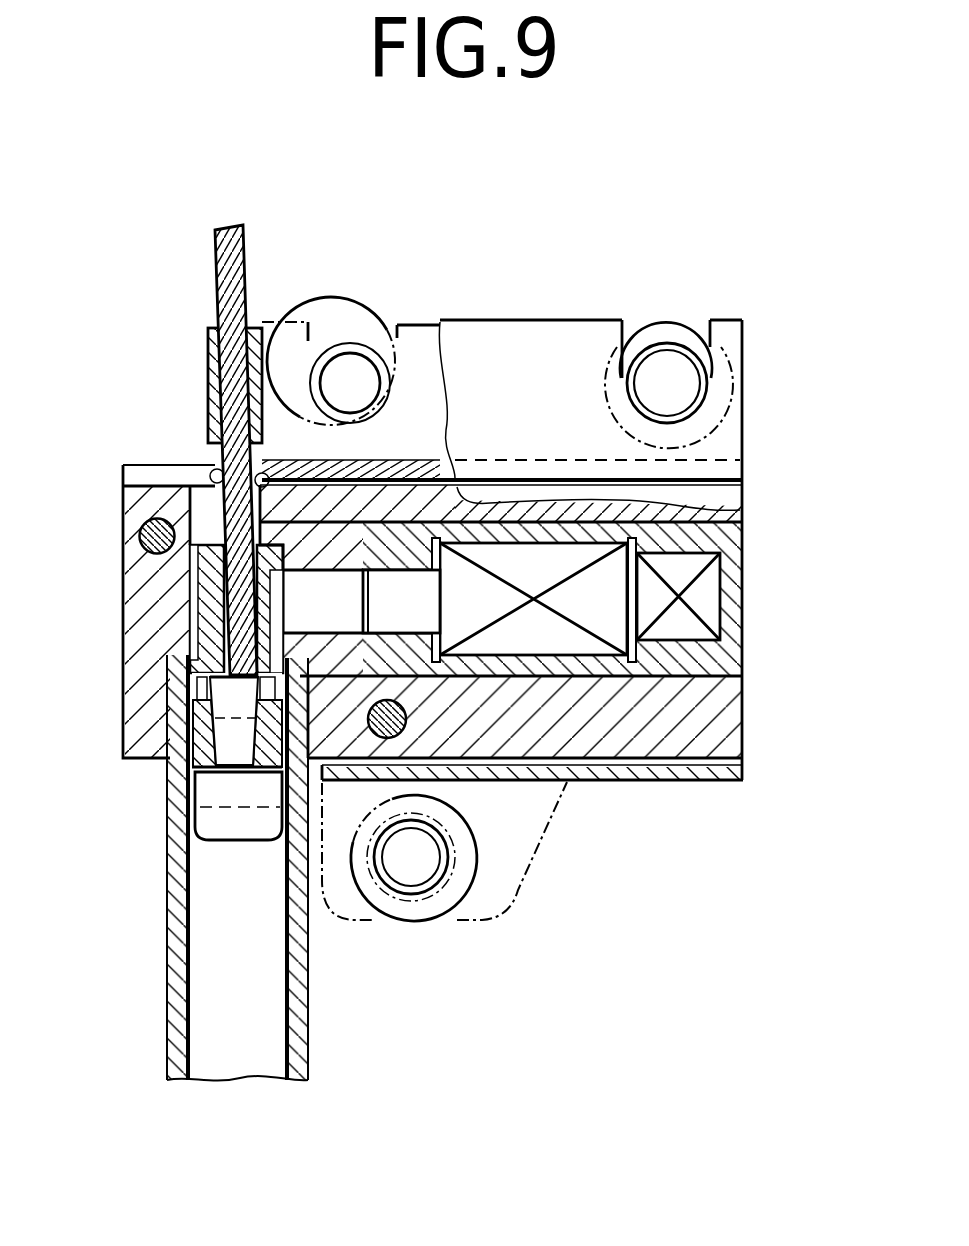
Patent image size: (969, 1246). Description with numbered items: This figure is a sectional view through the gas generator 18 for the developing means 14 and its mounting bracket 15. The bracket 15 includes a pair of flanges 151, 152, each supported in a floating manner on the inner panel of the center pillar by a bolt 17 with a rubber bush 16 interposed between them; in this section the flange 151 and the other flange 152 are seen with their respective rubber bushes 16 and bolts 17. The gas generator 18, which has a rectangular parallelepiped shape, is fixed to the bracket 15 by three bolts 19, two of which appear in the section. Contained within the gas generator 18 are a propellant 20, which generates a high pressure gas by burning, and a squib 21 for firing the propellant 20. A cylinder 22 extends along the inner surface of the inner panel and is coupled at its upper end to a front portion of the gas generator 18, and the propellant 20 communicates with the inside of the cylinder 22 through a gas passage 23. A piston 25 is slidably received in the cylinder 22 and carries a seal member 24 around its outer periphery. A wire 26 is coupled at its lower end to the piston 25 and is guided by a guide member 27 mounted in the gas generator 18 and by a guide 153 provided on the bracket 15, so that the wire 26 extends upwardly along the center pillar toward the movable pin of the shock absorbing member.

The developing means 14 is at (768, 527).
The bracket 15 is at (636, 795).
The flange 151 is at (490, 338).
The flange 152 is at (531, 892).
The guide 153 is at (216, 373).
The rubber bush 16 is at (363, 333).
The bolt 17 is at (347, 362).
The gas generator 18 is at (115, 666).
The bolt 19 is at (143, 528).
The propellant 20 is at (523, 560).
The squib 21 is at (705, 598).
The cylinder 22 is at (178, 945).
The gas passage 23 is at (333, 633).
The seal member 24 is at (192, 797).
The piston 25 is at (245, 830).
The wire 26 is at (243, 297).
The guide member 27 is at (215, 618).